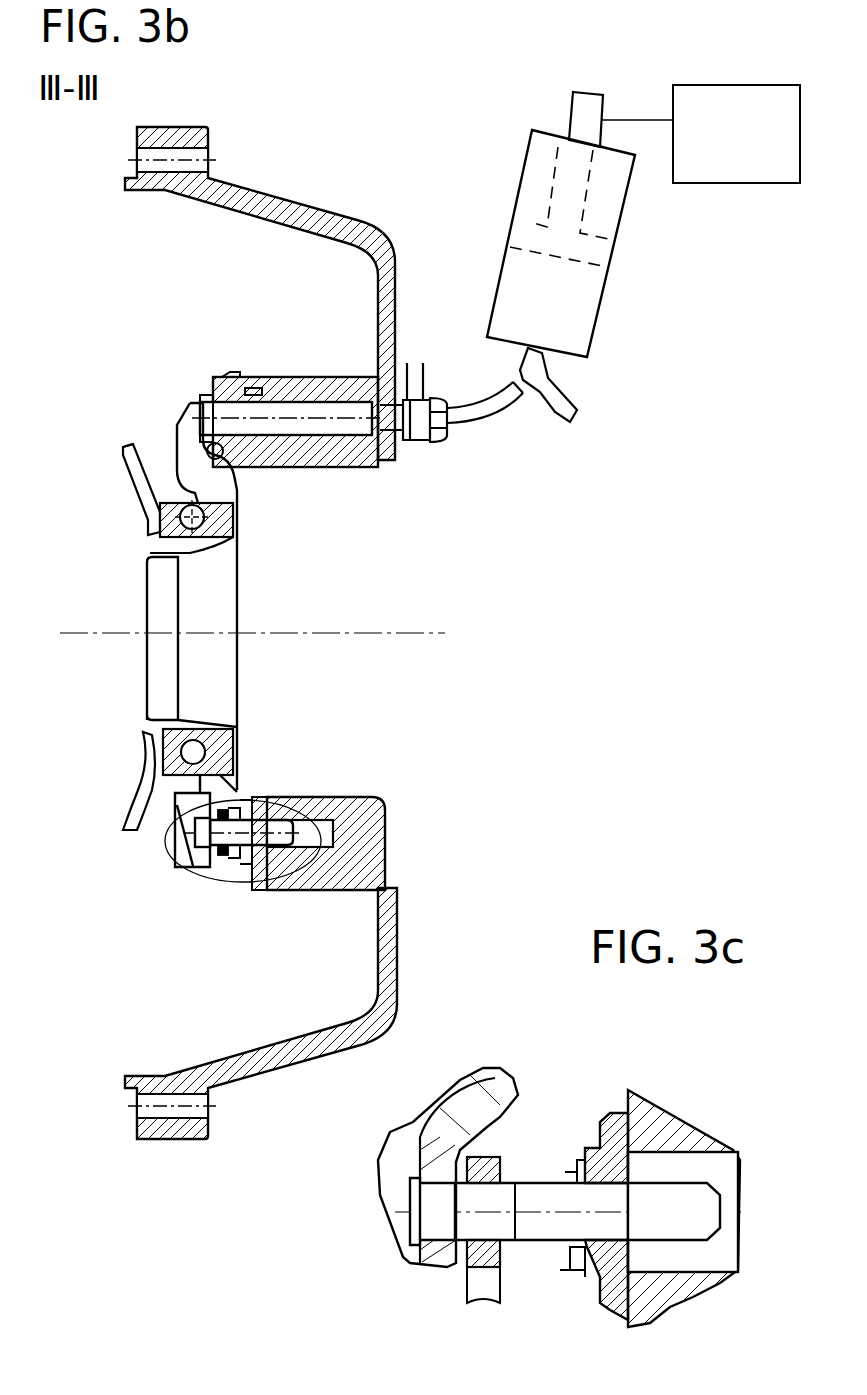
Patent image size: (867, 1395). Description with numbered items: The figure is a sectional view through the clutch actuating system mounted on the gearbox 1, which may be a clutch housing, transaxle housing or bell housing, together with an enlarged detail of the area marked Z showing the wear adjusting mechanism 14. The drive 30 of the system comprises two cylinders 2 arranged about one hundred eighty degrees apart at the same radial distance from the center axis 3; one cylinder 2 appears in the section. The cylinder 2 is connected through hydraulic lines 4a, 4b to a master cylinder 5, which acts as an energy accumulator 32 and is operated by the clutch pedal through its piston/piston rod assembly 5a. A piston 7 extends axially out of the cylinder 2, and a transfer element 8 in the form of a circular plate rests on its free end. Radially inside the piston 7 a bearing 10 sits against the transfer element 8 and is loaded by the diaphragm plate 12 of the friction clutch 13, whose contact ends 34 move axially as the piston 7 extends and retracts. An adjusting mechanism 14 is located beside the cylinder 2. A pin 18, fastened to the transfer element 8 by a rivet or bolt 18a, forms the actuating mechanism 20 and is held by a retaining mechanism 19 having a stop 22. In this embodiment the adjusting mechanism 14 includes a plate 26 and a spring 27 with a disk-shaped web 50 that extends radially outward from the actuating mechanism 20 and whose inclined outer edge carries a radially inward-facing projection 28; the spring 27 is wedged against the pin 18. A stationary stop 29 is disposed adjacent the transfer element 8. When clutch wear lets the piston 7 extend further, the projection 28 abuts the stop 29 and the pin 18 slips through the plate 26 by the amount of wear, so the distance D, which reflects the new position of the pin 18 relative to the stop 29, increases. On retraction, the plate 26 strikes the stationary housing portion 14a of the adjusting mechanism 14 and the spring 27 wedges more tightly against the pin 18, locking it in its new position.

In FIG. 3B, the gearbox 1 is at (330, 228).
In FIG. 3B, the cylinder 2 is at (322, 397).
In FIG. 3B, the center axis 3 is at (143, 633).
In FIG. 3B, the hydraulic line 4a is at (482, 415).
In FIG. 3B, the hydraulic line 4b is at (572, 385).
In FIG. 3B, the master cylinder 5 is at (542, 310).
In FIG. 3B, the piston/piston rod assembly 5a is at (577, 123).
In FIG. 3B, the piston 7 is at (258, 405).
In FIG. 3B, the transfer element 8 is at (177, 425).
In FIG. 3B, the bearing 10 is at (163, 730).
In FIG. 3B, the diaphragm plate 12 is at (123, 448).
In FIG. 3B, the friction clutch 13 is at (127, 440).
In FIG. 3B, the adjusting mechanism 14 is at (305, 905).
In FIG. 3C, the adjusting mechanism 14 is at (670, 1075).
In FIG. 3B, the stationary portion of the housing 14a is at (385, 832).
In FIG. 3C, the stationary portion of the housing 14a is at (633, 1142).
In FIG. 3B, the pin 18 is at (240, 827).
In FIG. 3C, the pin 18 is at (525, 1197).
In FIG. 3B, the rivet or screw/bolt 18a is at (200, 835).
In FIG. 3C, the retaining mechanism 19 is at (567, 1262).
In FIG. 3B, the actuating mechanism 20 is at (240, 850).
In FIG. 3C, the actuating mechanism 20 is at (518, 1250).
In FIG. 3B, the stop 22 is at (245, 800).
In FIG. 3C, the stop 22 is at (578, 1160).
In FIG. 3B, the plate 26 is at (270, 797).
In FIG. 3C, the plate 26 is at (612, 1123).
In FIG. 3C, the spring 27 is at (577, 1282).
In FIG. 3C, the radially inward-facing projection 28 is at (573, 1173).
In FIG. 3B, the stop 29 is at (223, 858).
In FIG. 3C, the stop 29 is at (475, 1262).
In FIG. 3B, the drive 30 is at (285, 370).
In FIG. 3B, the energy accumulator 32 is at (624, 72).
In FIG. 3B, the contact ends 34 is at (122, 477).
In FIG. 3C, the disk-shaped web 50 is at (572, 1258).
In FIG. 3C, the distance D is at (458, 1262).
In FIG. 3B, the detail region Z is at (240, 852).
In FIG. 3C, the detail region Z is at (555, 1017).